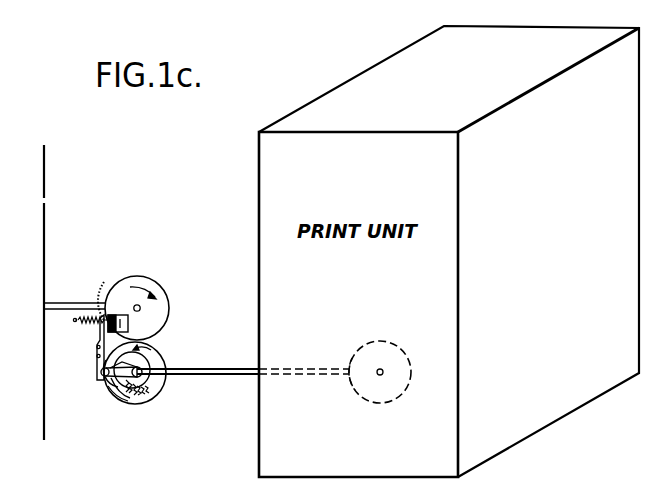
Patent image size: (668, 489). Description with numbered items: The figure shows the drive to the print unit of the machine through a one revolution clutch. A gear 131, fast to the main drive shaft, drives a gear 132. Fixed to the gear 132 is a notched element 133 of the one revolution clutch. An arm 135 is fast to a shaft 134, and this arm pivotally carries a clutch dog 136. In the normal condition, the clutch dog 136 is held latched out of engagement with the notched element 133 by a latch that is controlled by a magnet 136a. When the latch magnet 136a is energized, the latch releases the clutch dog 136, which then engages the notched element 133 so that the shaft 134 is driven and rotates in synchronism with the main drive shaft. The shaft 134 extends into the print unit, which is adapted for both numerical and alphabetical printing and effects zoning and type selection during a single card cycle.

The gear 131 is at (156, 287).
The latch magnet 136a is at (128, 323).
The notched element 133 is at (115, 367).
The gear 132 is at (161, 388).
The shaft 134 is at (240, 376).
The arm 135 is at (108, 382).
The clutch dog 136 is at (123, 389).